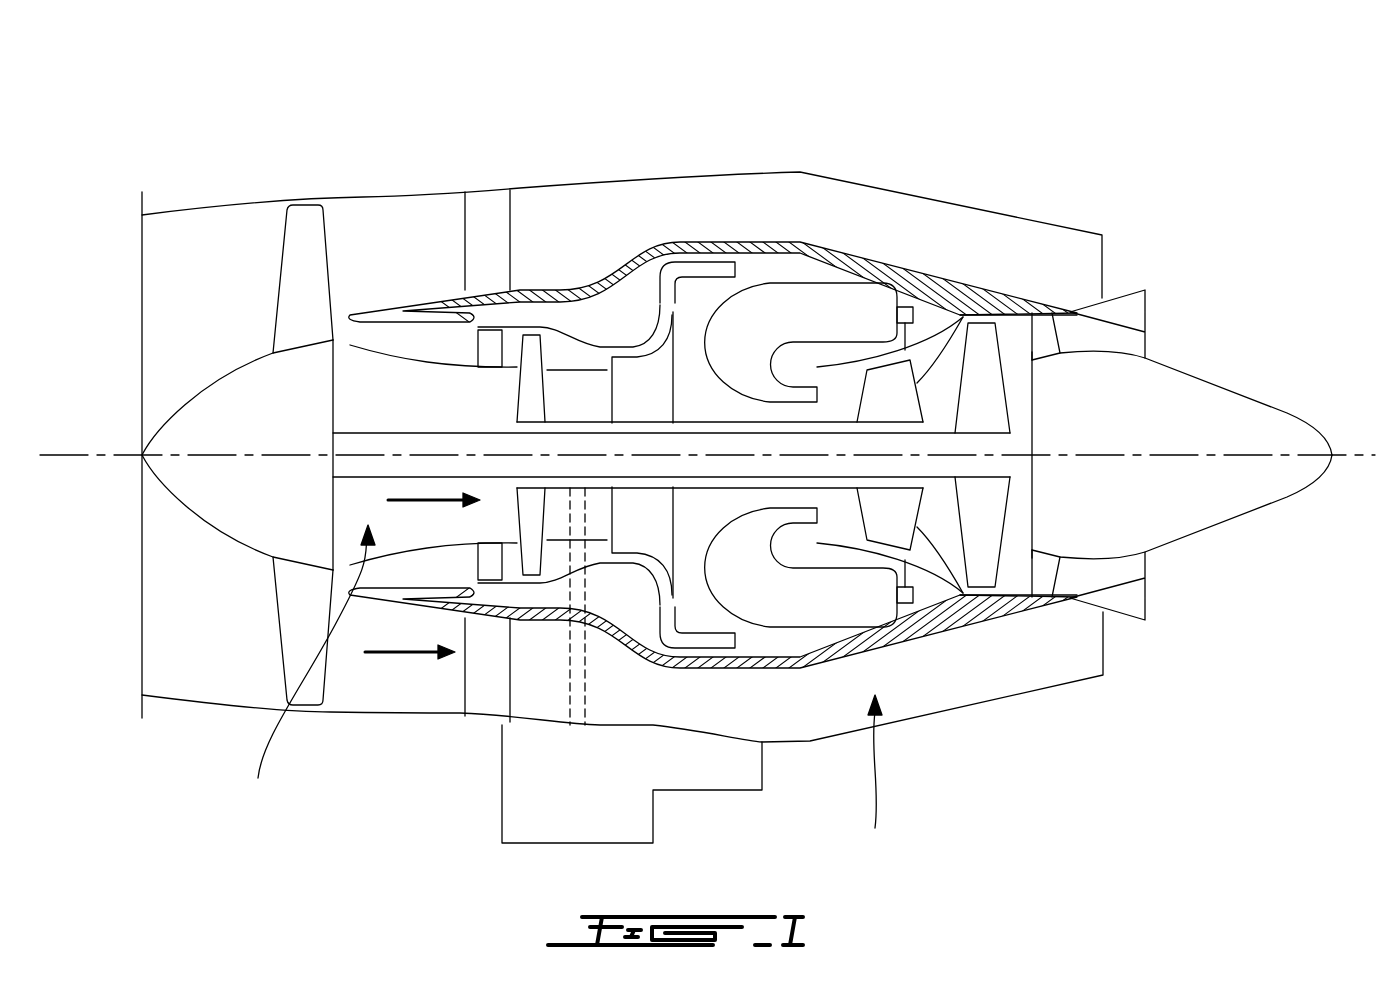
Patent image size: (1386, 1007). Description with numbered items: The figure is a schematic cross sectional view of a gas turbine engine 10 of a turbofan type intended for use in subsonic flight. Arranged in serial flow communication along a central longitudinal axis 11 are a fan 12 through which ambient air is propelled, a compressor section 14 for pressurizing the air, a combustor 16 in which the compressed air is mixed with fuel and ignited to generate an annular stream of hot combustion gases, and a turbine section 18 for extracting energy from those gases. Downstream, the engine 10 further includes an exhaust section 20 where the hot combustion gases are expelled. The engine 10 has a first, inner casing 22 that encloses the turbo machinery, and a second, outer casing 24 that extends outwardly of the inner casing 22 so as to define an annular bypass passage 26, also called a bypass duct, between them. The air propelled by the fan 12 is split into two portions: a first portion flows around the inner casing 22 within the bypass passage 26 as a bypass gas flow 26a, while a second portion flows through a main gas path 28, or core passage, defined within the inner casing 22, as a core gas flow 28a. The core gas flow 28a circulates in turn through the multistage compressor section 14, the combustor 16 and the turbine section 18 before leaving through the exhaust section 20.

The gas turbine engine 10 is at (922, 154).
The central longitudinal axis 11 is at (1370, 455).
The fan 12 is at (300, 618).
The compressor section 14 is at (567, 348).
The combustor 16 is at (797, 305).
The turbine section 18 is at (937, 525).
The exhaust section 20 is at (1112, 605).
The inner casing 22 is at (797, 670).
The outer casing 24 is at (388, 713).
The bypass passage 26 is at (873, 779).
The bypass gas flow 26a is at (417, 657).
The main gas path 28 is at (304, 671).
The core gas flow 28a is at (423, 492).